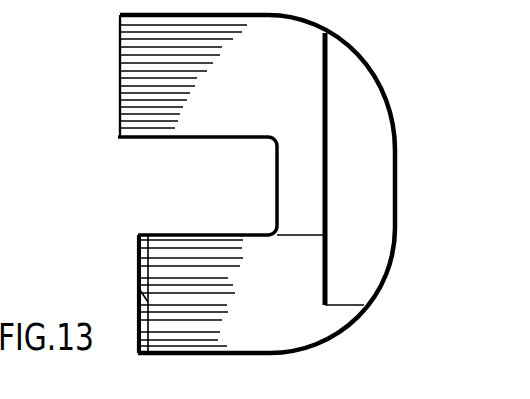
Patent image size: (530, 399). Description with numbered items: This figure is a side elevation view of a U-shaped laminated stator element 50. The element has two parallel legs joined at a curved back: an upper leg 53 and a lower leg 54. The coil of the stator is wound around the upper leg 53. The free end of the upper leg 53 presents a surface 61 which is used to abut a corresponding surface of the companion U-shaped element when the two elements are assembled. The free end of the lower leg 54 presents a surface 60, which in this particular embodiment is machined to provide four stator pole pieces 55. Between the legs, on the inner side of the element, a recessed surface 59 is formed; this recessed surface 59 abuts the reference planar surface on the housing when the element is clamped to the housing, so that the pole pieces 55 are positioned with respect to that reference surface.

The clip device 50 is at (113, 137).
The upper leg 53 is at (267, 86).
The leg 54 is at (289, 294).
The stator pole pieces 55 is at (140, 250).
The recessed surface 59 is at (327, 83).
The surface 60 is at (140, 297).
The surface 61 is at (120, 77).